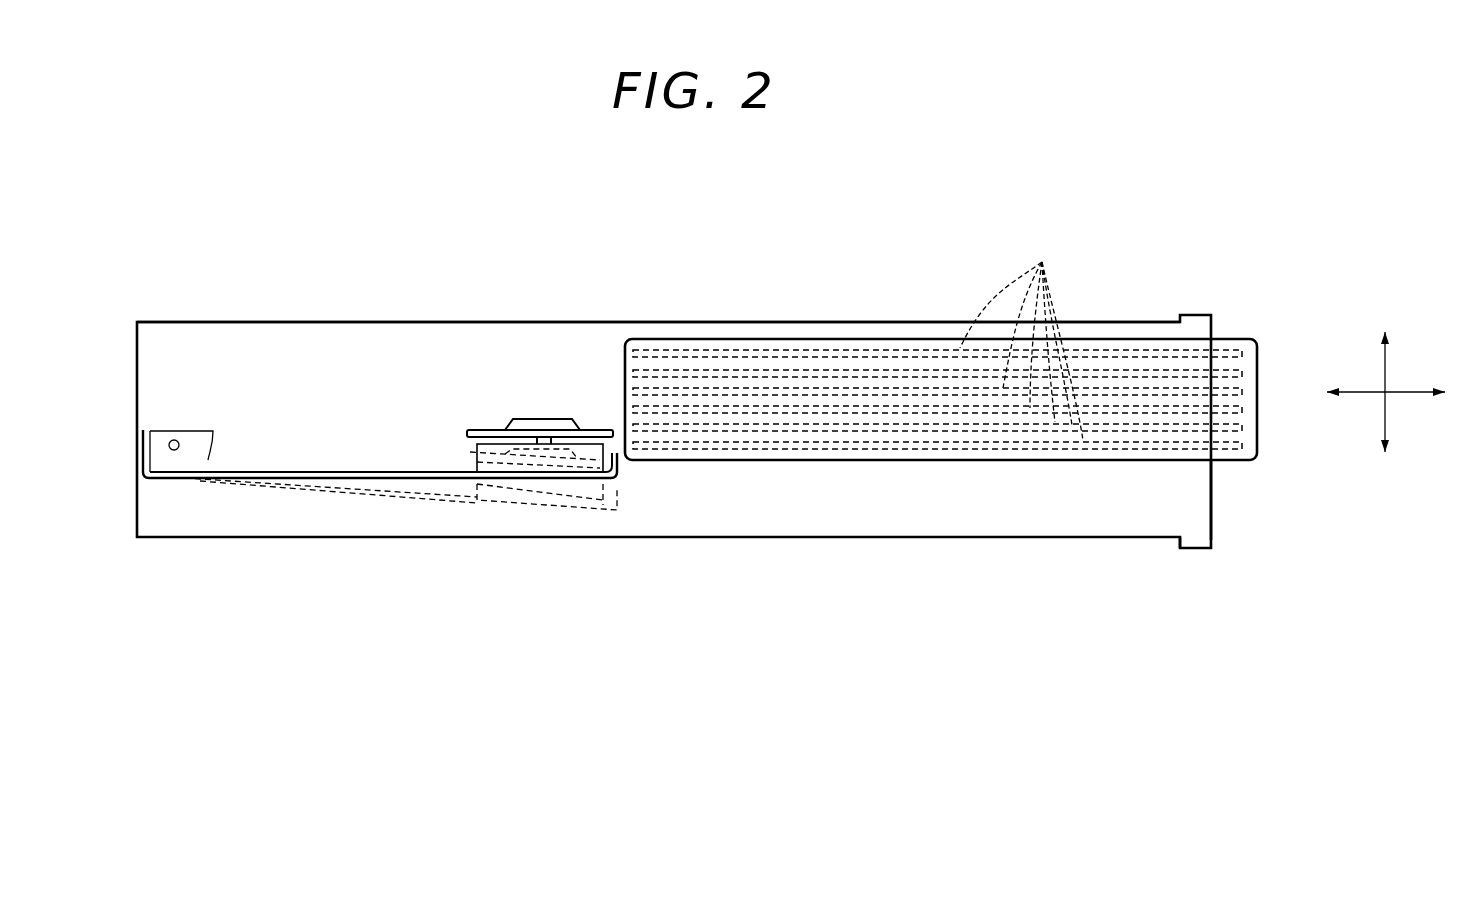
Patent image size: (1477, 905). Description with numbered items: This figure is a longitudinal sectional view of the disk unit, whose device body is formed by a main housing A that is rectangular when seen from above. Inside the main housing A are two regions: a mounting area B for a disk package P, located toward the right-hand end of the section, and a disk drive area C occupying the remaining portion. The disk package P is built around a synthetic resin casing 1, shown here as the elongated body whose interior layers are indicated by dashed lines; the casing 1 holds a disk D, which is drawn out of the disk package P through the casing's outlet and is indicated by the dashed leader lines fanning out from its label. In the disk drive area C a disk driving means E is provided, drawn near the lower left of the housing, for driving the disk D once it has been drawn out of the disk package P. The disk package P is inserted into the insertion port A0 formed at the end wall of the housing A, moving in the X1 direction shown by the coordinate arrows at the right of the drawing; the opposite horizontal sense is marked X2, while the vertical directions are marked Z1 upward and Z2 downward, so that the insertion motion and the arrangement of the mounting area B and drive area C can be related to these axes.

The main housing A is at (821, 538).
The insertion port A0 is at (1218, 477).
The disk package mounting area B is at (1177, 500).
The disk drive area C is at (272, 362).
The disk package P is at (728, 312).
The casing 1 is at (870, 340).
The disk D is at (1043, 260).
The disk driving means E is at (446, 452).
The X1 direction X1 is at (1340, 393).
The X2 direction X2 is at (1431, 393).
The Z1 direction Z1 is at (1386, 347).
The Z2 direction Z2 is at (1386, 436).